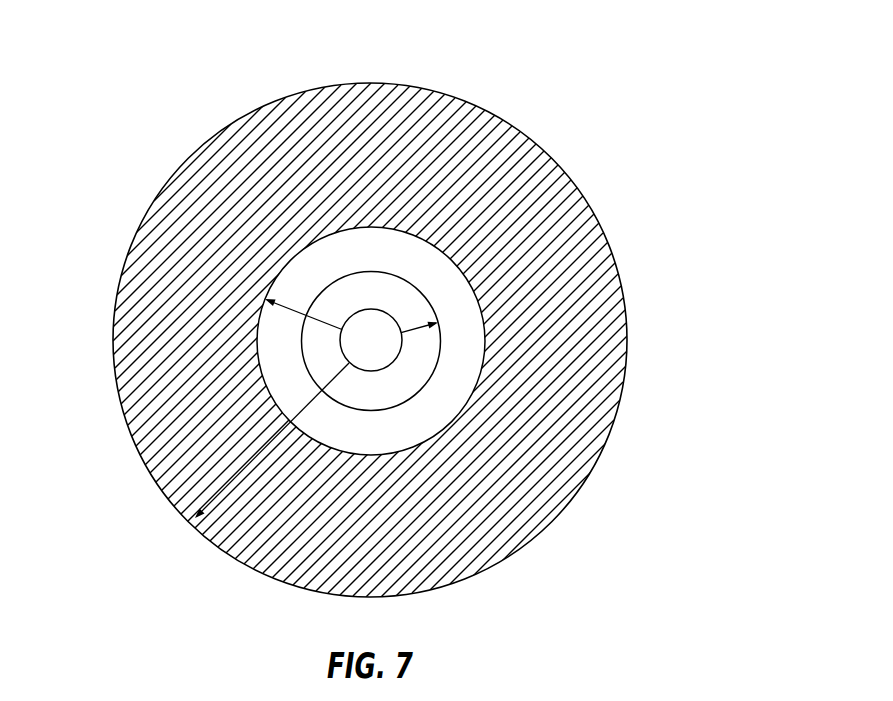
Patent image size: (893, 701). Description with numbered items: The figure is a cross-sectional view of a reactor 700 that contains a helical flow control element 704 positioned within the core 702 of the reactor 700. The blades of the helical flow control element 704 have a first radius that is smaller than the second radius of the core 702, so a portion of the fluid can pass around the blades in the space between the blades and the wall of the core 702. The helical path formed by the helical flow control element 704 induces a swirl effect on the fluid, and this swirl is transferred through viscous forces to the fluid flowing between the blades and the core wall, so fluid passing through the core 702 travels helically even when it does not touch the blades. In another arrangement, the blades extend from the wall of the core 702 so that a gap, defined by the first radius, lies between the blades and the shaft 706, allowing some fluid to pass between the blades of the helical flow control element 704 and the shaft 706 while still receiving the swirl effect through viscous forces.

The reactor 700 is at (482, 48).
The core 702 is at (250, 342).
The helical flow control element 704 is at (371, 302).
The shaft 706 is at (373, 374).